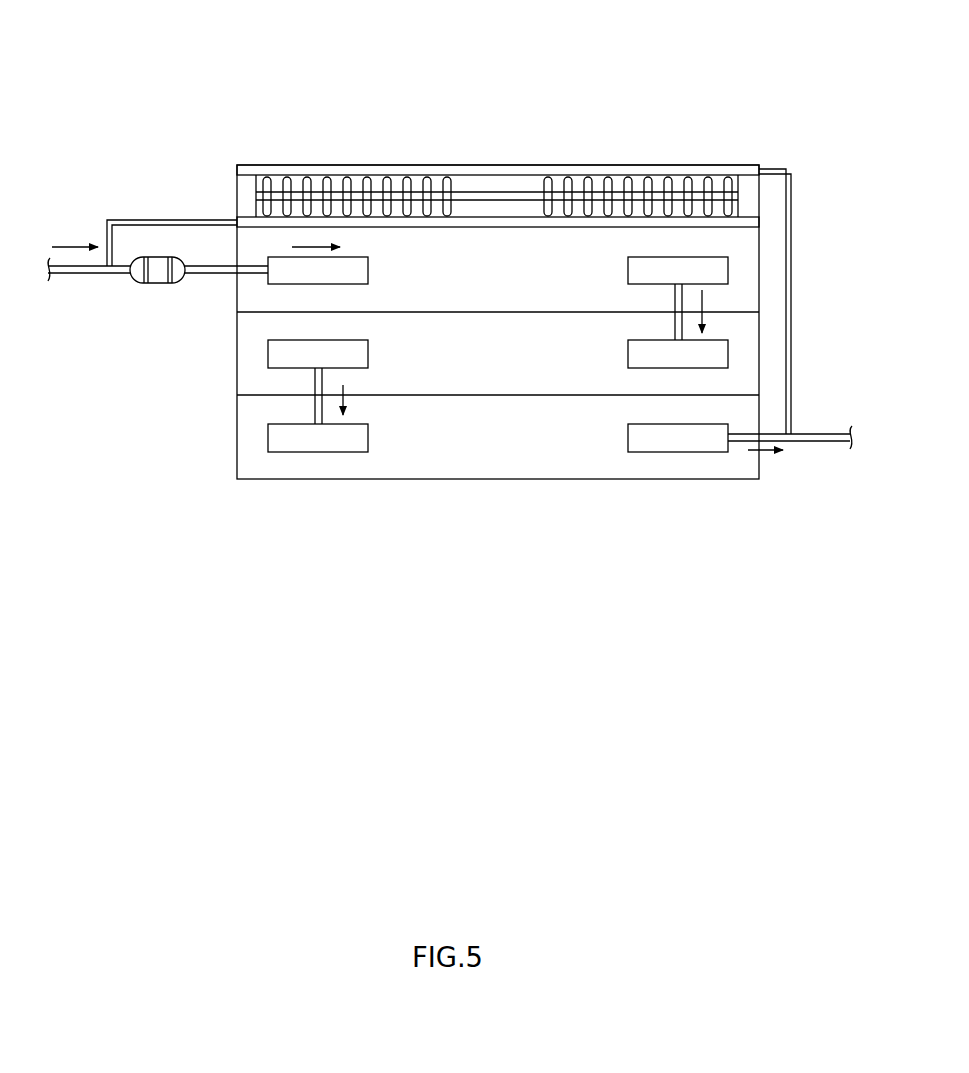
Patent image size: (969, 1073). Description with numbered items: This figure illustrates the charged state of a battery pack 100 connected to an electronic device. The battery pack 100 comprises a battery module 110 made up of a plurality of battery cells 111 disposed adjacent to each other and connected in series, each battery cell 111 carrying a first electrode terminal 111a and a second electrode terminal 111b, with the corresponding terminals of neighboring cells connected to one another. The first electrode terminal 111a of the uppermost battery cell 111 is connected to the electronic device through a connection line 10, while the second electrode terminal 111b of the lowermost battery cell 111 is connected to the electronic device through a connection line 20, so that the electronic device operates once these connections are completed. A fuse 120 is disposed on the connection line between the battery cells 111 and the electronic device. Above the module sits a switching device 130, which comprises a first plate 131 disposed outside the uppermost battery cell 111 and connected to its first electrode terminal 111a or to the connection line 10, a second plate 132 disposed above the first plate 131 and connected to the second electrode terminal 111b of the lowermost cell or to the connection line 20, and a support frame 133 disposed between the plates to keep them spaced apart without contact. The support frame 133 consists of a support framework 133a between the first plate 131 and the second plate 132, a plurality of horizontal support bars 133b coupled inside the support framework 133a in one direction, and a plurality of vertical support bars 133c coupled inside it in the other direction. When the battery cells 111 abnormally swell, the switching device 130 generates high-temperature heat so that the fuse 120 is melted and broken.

The battery pack 100 is at (698, 98).
The connection line 10 is at (70, 276).
The connection line 20 is at (822, 444).
The battery module 110 is at (165, 320).
The battery cell 111 is at (248, 298).
The first electrode terminal 111a is at (370, 268).
The second electrode terminal 111b is at (677, 453).
The fuse 120 is at (155, 283).
The switching device 130 is at (507, 98).
The first plate 131 is at (497, 222).
The second plate 132 is at (428, 172).
The support frame 133 is at (368, 117).
The support framework 133a is at (246, 184).
The horizontal support bar 133b is at (305, 194).
The vertical support bar 133c is at (366, 184).